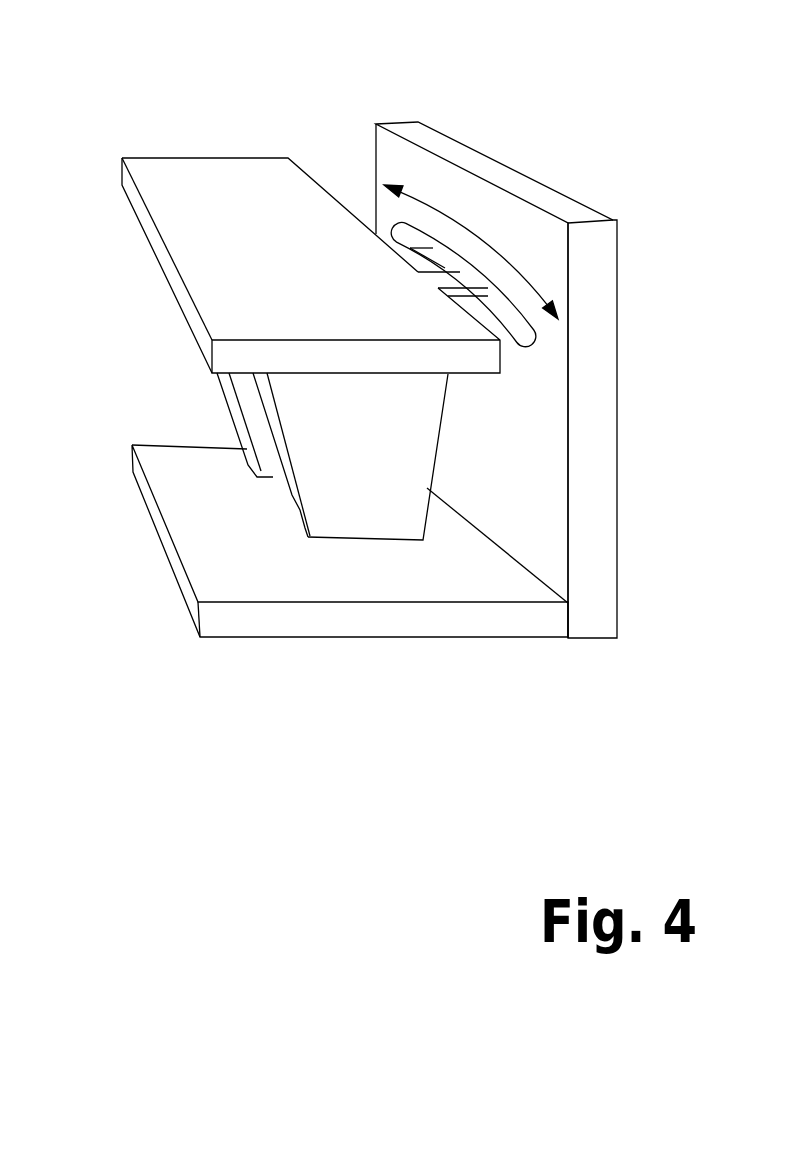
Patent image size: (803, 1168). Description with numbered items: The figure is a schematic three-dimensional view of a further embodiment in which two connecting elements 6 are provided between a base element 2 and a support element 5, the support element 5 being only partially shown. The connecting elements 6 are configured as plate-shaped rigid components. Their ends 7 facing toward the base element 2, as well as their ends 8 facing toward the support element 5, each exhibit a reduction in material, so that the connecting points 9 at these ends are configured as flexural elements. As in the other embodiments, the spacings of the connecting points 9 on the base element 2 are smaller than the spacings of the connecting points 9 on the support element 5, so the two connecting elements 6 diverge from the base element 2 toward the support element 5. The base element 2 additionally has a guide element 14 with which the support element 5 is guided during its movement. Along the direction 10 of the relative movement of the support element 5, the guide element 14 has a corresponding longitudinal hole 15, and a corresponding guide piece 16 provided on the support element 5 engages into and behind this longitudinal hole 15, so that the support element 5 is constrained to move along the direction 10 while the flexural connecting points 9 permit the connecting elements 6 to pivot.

The base element 2 is at (252, 573).
The support element 5 is at (253, 223).
The connecting elements 6 is at (253, 408).
The ends facing toward base element 7 is at (245, 456).
The ends facing toward support element 8 is at (380, 383).
The connecting points 9 is at (273, 478).
The direction of relative movement 10 is at (508, 317).
The guide element 14 is at (598, 367).
The longitudinal hole 15 is at (517, 327).
The guide piece 16 is at (460, 272).